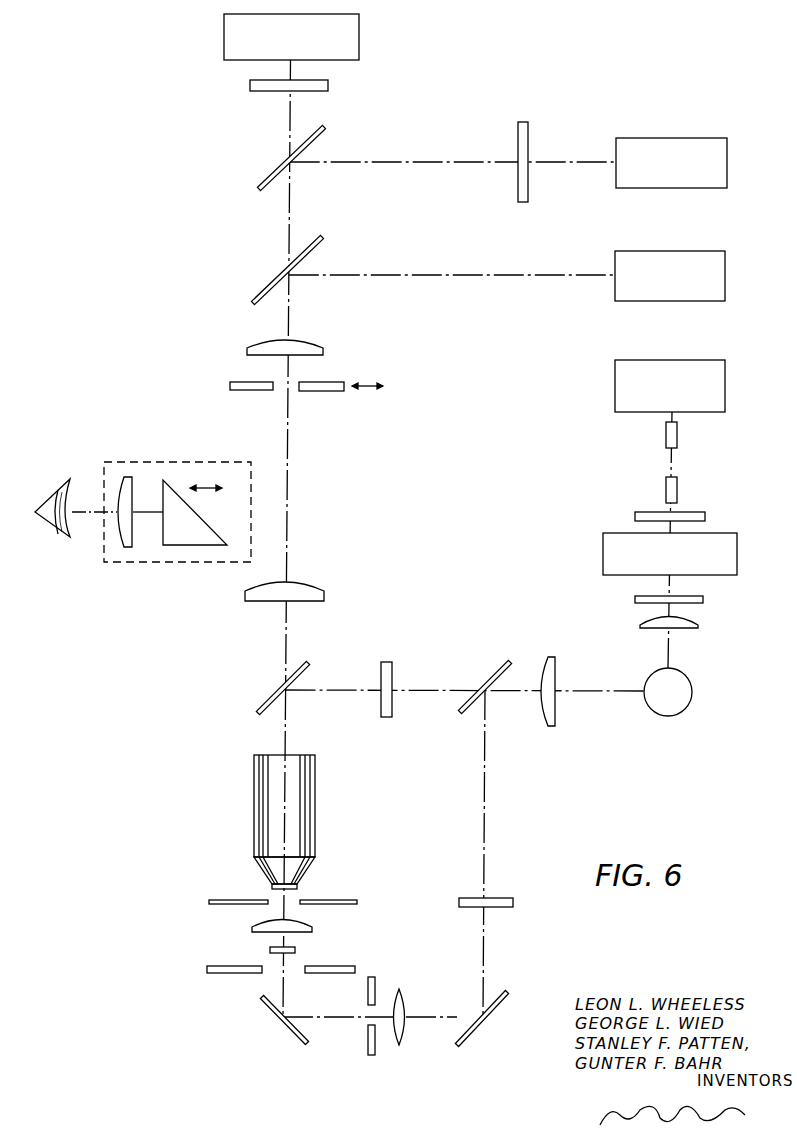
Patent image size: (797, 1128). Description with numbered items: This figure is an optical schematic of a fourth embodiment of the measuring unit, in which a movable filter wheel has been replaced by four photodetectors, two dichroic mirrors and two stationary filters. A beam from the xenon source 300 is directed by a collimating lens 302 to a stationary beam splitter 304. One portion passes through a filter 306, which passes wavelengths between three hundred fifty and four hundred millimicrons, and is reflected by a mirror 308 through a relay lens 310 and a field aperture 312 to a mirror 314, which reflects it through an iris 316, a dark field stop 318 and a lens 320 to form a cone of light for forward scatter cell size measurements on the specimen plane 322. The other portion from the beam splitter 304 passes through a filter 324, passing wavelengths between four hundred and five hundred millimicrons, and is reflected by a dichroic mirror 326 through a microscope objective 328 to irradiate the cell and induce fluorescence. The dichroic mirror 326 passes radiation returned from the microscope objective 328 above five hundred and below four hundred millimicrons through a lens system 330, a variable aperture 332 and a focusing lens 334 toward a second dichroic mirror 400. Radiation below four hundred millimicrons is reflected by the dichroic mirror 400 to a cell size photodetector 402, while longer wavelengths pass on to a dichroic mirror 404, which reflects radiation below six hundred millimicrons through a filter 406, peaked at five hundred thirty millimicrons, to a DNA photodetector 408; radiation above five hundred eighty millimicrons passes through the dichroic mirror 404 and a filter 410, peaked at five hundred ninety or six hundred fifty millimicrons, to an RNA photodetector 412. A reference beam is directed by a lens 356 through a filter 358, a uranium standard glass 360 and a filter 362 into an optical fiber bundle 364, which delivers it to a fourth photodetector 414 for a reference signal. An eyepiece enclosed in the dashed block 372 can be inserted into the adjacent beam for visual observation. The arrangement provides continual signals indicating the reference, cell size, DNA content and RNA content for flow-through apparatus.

The xenon source 300 is at (686, 708).
The collimating lens 302 is at (557, 713).
The stationary beam splitter 304 is at (498, 661).
The filter 306 is at (497, 907).
The mirror 308 is at (500, 1006).
The relay lens 310 is at (407, 1032).
The field aperture 312 is at (370, 1056).
The mirror 314 is at (297, 1037).
The iris 316 is at (207, 968).
The dark field stop 318 is at (270, 950).
The lens 320 is at (313, 928).
The specimen plane 322 is at (345, 900).
The filter 324 is at (392, 673).
The dichroic mirror 326 is at (272, 693).
The microscope objective 328 is at (254, 818).
The lens system 330 is at (308, 584).
The variable aperture 332 is at (336, 380).
The focusing lens 334 is at (312, 342).
The lens 356 is at (699, 624).
The filter 358 is at (635, 598).
The standard glass 360 is at (603, 540).
The filter 362 is at (706, 515).
The optical fiber bundle 364 is at (665, 490).
The eyepiece 372 is at (208, 462).
The second dichroic mirror 400 is at (318, 243).
The cell size photodetector 402 is at (660, 251).
The dichroic mirror 404 is at (318, 133).
The filter 406 is at (522, 120).
The DNA photodetector 408 is at (664, 138).
The filter 410 is at (329, 86).
The RNA photodetector 412 is at (360, 33).
The fourth photodetector 414 is at (661, 360).